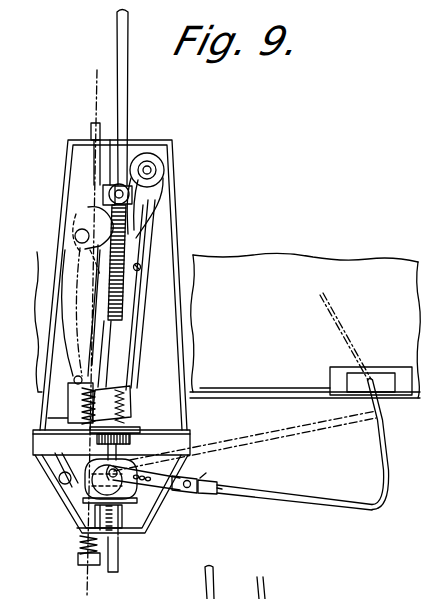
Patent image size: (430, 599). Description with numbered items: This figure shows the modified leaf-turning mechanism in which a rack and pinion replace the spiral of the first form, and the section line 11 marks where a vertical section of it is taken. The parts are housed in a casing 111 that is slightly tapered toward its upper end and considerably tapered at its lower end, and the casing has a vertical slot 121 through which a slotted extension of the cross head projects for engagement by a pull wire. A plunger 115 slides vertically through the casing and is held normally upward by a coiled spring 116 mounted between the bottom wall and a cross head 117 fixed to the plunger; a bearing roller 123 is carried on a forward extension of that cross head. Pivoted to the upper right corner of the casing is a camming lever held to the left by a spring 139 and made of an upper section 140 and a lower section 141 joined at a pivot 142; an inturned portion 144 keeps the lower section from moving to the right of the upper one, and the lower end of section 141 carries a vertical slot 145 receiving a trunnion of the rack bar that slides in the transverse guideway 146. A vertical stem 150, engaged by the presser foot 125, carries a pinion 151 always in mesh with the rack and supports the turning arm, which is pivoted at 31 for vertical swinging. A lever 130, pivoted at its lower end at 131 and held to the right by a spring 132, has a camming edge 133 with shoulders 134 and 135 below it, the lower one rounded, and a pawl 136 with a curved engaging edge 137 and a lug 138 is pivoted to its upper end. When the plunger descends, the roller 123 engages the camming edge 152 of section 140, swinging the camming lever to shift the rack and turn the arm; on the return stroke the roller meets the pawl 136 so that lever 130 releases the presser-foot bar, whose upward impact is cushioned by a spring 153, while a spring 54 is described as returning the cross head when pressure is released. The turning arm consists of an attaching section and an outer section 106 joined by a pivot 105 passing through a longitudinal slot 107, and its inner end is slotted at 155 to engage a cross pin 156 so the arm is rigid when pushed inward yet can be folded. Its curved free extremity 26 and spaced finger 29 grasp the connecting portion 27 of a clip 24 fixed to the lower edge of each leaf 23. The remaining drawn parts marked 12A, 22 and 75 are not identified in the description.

The section line 11 is at (96, 333).
The plunger 115 is at (124, 117).
The cross head 117 is at (106, 192).
The bearing roller 123 is at (115, 188).
The spring 139 is at (163, 190).
The coiled spring 116 is at (127, 227).
The casing 111 is at (175, 245).
The curved engaging edge 137 is at (103, 212).
The pawl 136 is at (90, 228).
The lug 138 is at (76, 239).
The pivot 142 is at (141, 268).
The vertical slot 121 is at (100, 303).
The lever 130 is at (85, 320).
The upper section of camming lever 140 is at (135, 298).
The shoulder 134 is at (87, 328).
The camming edge 152 is at (109, 318).
The camming edge 133 is at (101, 335).
The shoulder 135 is at (83, 372).
The lower section of camming lever 141 is at (90, 380).
The inturned portion 144 is at (122, 400).
The vertical slot 145 is at (97, 455).
The pinion 151 is at (133, 434).
The pivot 31 is at (137, 462).
The guideway 146 is at (192, 440).
The spring 132 is at (61, 483).
The pivot 131 is at (83, 502).
The presser foot 125 is at (90, 522).
The ledge 12A is at (77, 533).
The vertical shaft or stem 150 is at (117, 515).
The cushioning spring 153 is at (100, 550).
The spring 54 is at (93, 565).
The cross pin 156 is at (177, 491).
The slot 155 is at (184, 494).
The longitudinal slot 107 is at (203, 479).
The turning arm section 106 is at (216, 488).
The pivot 105 is at (216, 495).
The rod 22 is at (327, 500).
The finger 29 is at (388, 458).
The curved free extremity 26 is at (381, 430).
The pin end 75 is at (383, 404).
The connecting portion 27 is at (380, 372).
The engaging member or clip 24 is at (324, 362).
The leaf 23 is at (325, 268).